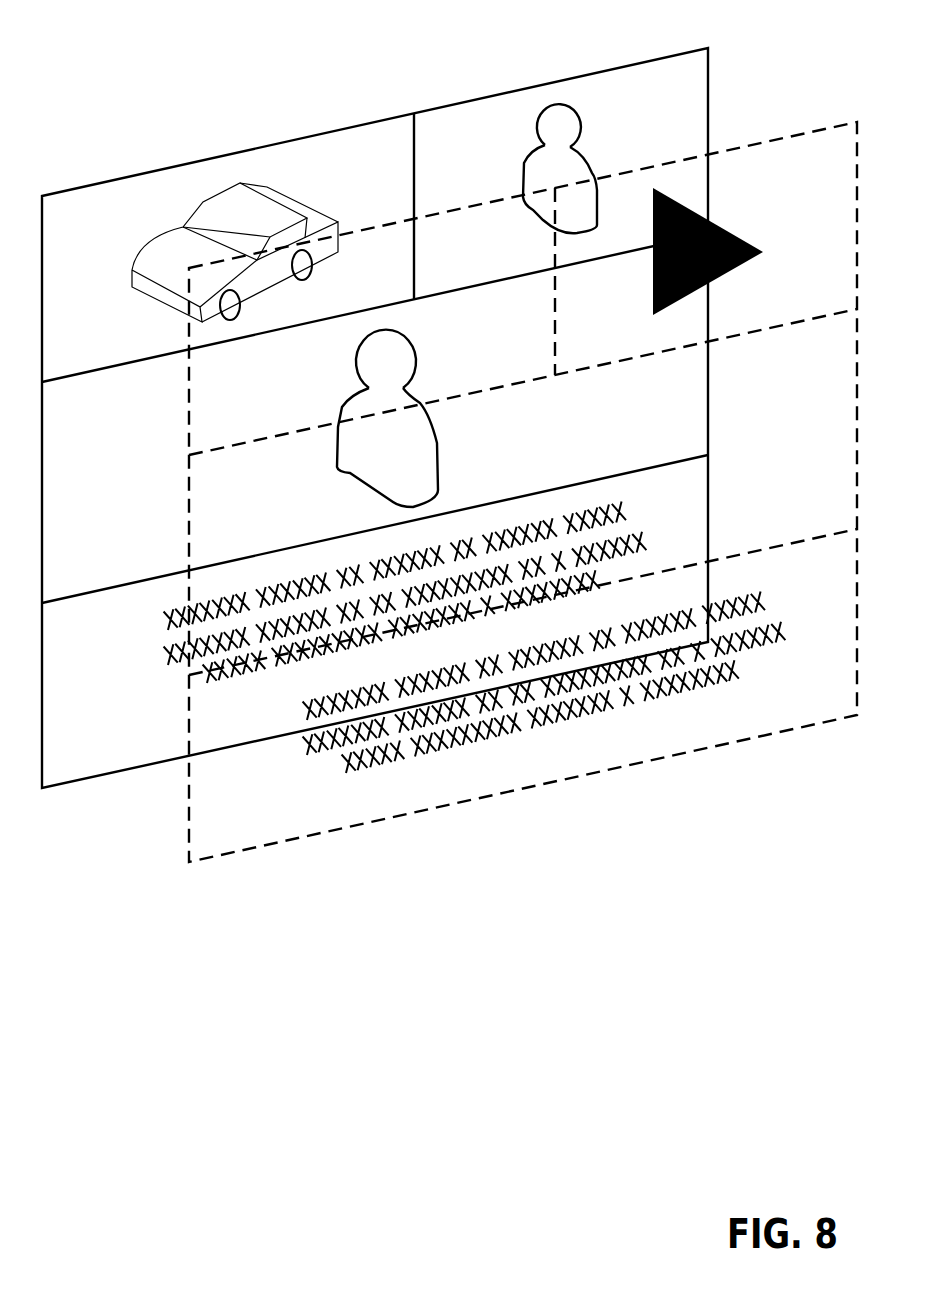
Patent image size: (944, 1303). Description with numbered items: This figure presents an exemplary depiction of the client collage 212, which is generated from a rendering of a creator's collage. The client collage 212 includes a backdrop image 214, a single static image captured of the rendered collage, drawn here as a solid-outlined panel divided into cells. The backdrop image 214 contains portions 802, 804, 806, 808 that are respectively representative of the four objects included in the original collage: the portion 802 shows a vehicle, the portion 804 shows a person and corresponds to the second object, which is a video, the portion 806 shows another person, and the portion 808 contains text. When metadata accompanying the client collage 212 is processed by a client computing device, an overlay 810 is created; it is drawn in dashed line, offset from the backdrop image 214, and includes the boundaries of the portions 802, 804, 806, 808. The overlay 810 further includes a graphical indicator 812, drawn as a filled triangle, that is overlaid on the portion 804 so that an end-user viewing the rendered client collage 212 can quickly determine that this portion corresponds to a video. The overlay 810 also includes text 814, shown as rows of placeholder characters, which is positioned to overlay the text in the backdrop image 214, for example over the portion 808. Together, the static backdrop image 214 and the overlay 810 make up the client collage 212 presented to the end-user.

The client collage 212 is at (765, 67).
The backdrop image 214 is at (303, 137).
The portion 802 is at (124, 337).
The portion 804 is at (485, 152).
The portion 806 is at (115, 506).
The portion 808 is at (115, 726).
The overlay 810 is at (375, 845).
The graphical indicator 812 is at (732, 233).
The text 814 is at (760, 593).